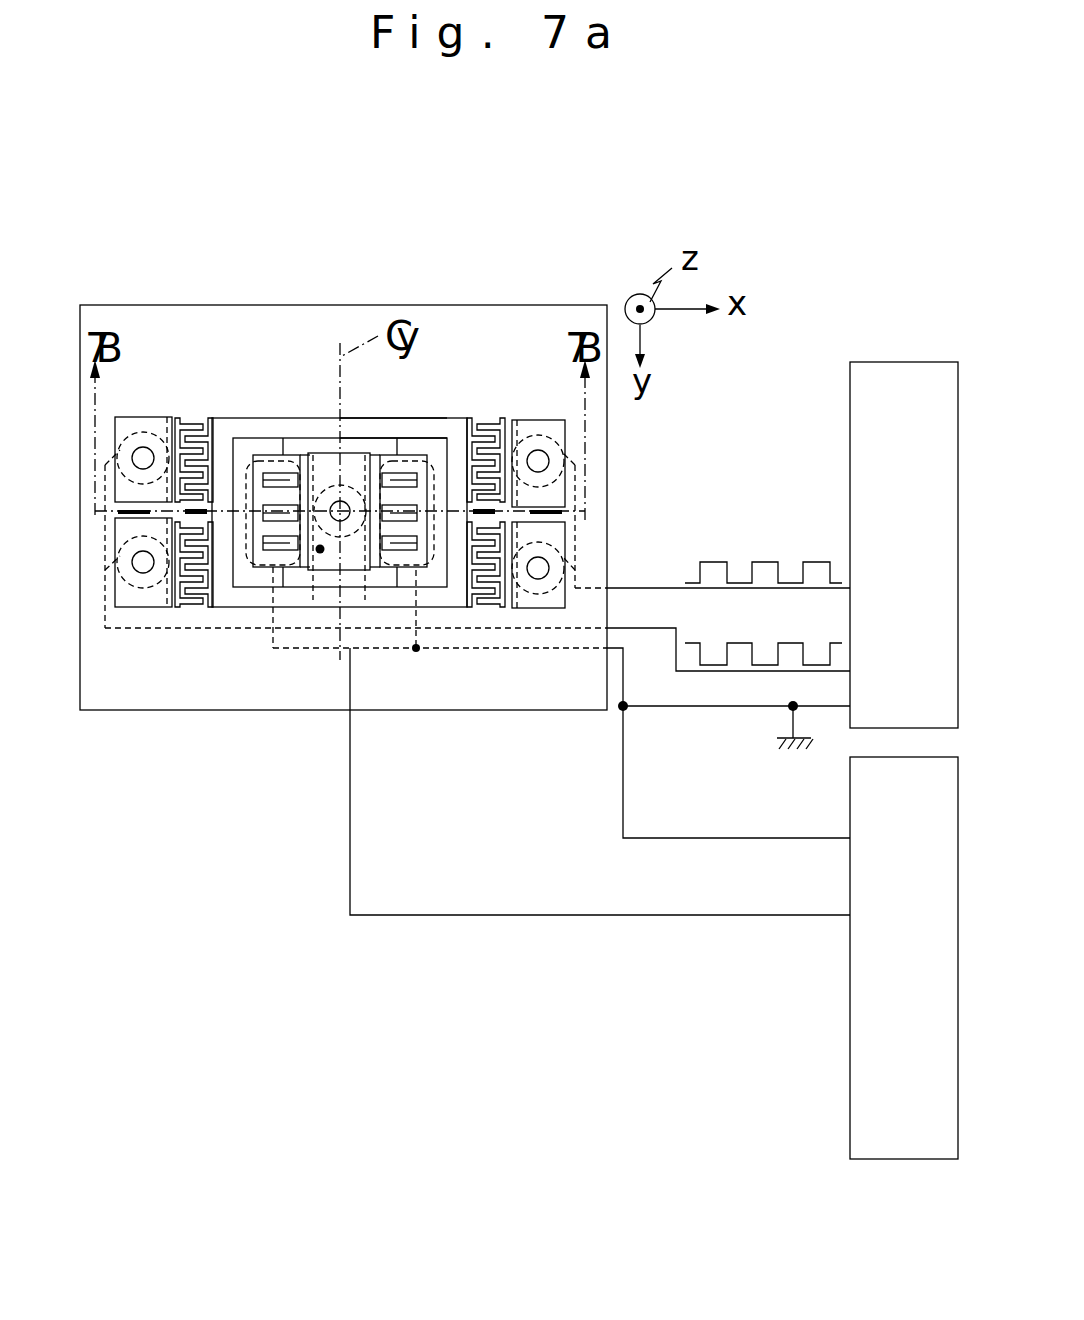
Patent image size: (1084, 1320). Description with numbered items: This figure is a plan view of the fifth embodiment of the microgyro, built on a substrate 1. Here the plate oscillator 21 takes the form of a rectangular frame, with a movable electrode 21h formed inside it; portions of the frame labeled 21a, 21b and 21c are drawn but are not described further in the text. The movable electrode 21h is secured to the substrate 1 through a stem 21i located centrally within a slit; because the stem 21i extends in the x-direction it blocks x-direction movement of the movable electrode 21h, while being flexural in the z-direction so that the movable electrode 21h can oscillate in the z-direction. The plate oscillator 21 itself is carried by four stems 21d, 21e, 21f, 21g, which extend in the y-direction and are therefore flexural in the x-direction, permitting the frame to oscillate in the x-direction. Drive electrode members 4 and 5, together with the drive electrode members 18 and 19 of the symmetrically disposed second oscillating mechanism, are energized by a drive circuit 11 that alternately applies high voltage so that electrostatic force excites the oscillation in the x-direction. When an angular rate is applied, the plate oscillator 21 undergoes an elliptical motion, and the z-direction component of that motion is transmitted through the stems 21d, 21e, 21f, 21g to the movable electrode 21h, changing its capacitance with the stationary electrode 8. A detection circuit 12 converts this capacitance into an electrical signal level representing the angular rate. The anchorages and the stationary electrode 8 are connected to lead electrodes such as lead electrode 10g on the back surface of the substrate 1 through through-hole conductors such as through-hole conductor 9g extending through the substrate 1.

The substrate 1 is at (200, 305).
The drive electrode member 4 is at (147, 418).
The drive electrode member 5 is at (527, 420).
The stationary electrode 8 is at (350, 452).
The through-hole conductor 9g is at (270, 565).
The lead electrode 10g is at (185, 590).
The drive circuit 11 is at (877, 362).
The detection circuit 12 is at (850, 1070).
The drive electrode member 18 is at (135, 607).
The drive electrode member 19 is at (532, 608).
The plate oscillator 21 is at (293, 419).
The comb electrode 21a is at (190, 420).
The comb electrode 21b is at (480, 427).
The frame portion 21c is at (380, 428).
The stem 21d is at (283, 453).
The stem 21e is at (397, 454).
The stem 21f is at (283, 569).
The stem 21g is at (397, 570).
The movable electrode 21h is at (320, 552).
The stem 21i is at (272, 513).